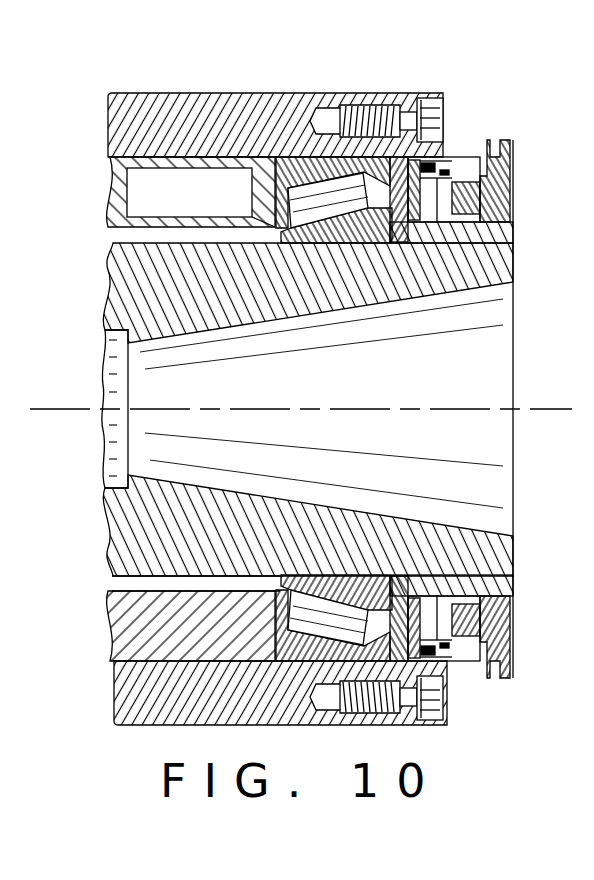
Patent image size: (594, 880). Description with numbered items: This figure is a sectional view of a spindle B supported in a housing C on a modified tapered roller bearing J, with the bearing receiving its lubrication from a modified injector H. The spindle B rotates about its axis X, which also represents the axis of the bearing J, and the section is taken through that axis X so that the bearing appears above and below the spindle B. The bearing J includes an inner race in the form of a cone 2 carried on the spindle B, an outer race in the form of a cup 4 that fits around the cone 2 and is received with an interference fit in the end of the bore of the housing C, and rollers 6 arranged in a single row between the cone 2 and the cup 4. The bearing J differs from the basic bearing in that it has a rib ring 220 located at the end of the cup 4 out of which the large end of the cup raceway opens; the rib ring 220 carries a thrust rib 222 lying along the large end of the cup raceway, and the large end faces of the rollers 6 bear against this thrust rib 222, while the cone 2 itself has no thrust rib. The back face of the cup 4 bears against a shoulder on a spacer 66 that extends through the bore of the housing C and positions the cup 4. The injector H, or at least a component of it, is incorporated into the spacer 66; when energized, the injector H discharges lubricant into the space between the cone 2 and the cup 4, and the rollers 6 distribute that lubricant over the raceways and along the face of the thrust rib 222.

The housing C is at (218, 86).
The cup 4 is at (292, 118).
The injector H is at (176, 187).
The cone 2 is at (387, 240).
The rollers 6 is at (322, 202).
The thrust rib 222 is at (342, 622).
The rib ring 220 is at (418, 600).
The spindle B is at (528, 249).
The axis X is at (311, 409).
The modified tapered roller bearing J is at (262, 581).
The spacer 66 is at (162, 612).